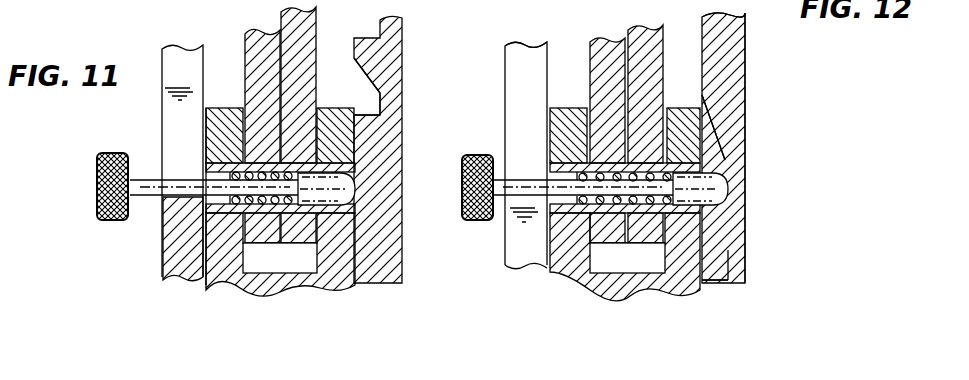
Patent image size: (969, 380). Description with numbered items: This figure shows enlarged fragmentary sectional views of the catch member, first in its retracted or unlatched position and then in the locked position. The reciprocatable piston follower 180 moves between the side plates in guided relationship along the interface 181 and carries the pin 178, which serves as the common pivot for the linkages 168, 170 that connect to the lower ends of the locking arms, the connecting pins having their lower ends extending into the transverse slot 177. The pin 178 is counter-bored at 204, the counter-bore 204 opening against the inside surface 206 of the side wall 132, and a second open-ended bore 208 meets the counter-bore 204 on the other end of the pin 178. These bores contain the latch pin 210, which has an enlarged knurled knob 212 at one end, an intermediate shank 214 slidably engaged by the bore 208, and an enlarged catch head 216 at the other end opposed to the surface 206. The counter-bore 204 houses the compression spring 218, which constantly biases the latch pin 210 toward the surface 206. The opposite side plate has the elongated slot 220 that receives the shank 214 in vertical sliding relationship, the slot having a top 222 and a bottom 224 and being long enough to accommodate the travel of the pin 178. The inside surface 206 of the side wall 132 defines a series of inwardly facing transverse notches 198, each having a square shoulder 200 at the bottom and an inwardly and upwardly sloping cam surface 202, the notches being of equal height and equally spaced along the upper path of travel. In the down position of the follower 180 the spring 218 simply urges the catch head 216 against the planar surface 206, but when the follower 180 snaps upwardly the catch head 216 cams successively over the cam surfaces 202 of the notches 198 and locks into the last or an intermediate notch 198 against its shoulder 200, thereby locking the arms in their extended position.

In FIG. 12, the side wall 132 is at (746, 38).
In FIG. 11, the linkage 168 is at (312, 22).
In FIG. 12, the linkage 168 is at (662, 36).
In FIG. 11, the linkage 170 is at (246, 45).
In FIG. 12, the linkage 170 is at (590, 60).
In FIG. 12, the transverse slot 177 is at (698, 251).
In FIG. 11, the pin 178 is at (298, 160).
In FIG. 11, the piston follower 180 is at (340, 107).
In FIG. 12, the piston follower 180 is at (688, 104).
In FIG. 11, the interface 181 is at (358, 148).
In FIG. 11, the transverse notches 198 is at (366, 112).
In FIG. 12, the transverse notches 198 is at (718, 267).
In FIG. 11, the square shoulder 200 is at (365, 118).
In FIG. 11, the cam surface 202 is at (385, 65).
In FIG. 12, the cam surface 202 is at (723, 157).
In FIG. 11, the counter-bore 204 is at (252, 162).
In FIG. 12, the counter-bore 204 is at (650, 160).
In FIG. 12, the inside surface 206 is at (700, 53).
In FIG. 11, the open-ended bore 208 is at (220, 192).
In FIG. 11, the latch pin 210 is at (149, 168).
In FIG. 11, the knurled knob 212 is at (95, 186).
In FIG. 12, the knurled knob 212 is at (463, 204).
In FIG. 11, the intermediate shank 214 is at (187, 177).
In FIG. 11, the catch head 216 is at (343, 186).
In FIG. 12, the catch head 216 is at (712, 192).
In FIG. 12, the compression spring 218 is at (558, 272).
In FIG. 11, the elongated slot 220 is at (172, 62).
In FIG. 12, the elongated slot 220 is at (525, 238).
In FIG. 12, the top of the slot 222 is at (507, 157).
In FIG. 11, the bottom of the slot 224 is at (163, 227).